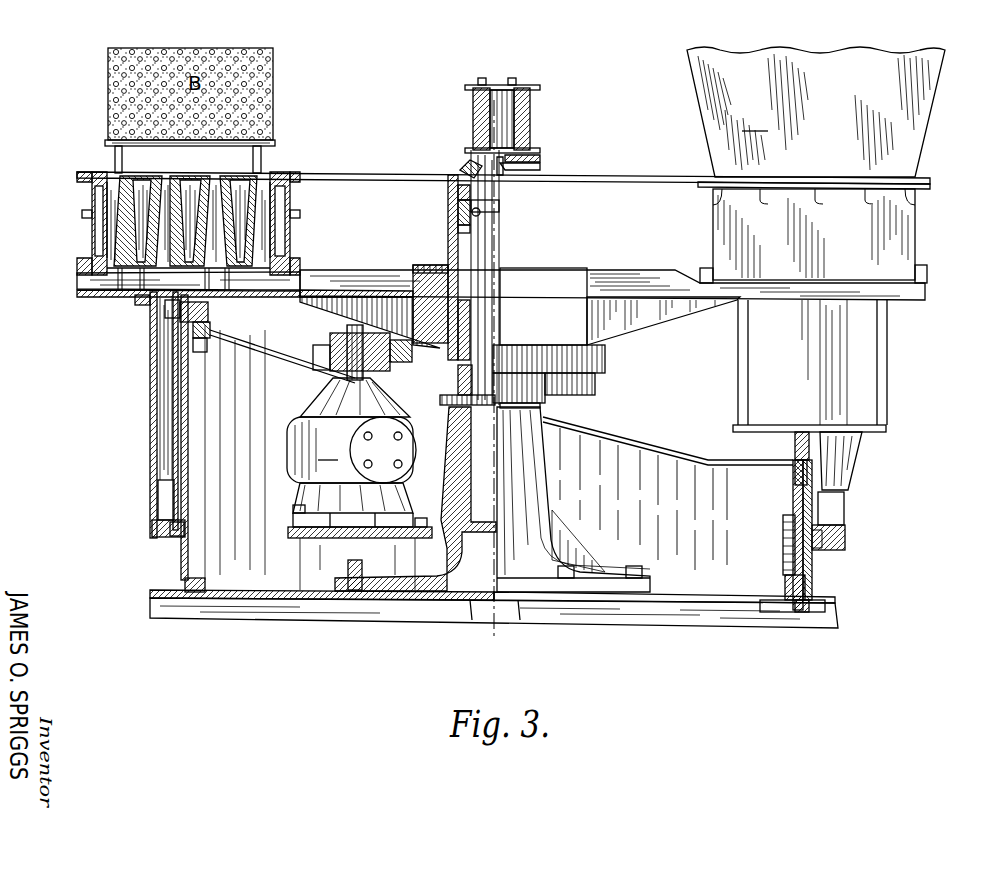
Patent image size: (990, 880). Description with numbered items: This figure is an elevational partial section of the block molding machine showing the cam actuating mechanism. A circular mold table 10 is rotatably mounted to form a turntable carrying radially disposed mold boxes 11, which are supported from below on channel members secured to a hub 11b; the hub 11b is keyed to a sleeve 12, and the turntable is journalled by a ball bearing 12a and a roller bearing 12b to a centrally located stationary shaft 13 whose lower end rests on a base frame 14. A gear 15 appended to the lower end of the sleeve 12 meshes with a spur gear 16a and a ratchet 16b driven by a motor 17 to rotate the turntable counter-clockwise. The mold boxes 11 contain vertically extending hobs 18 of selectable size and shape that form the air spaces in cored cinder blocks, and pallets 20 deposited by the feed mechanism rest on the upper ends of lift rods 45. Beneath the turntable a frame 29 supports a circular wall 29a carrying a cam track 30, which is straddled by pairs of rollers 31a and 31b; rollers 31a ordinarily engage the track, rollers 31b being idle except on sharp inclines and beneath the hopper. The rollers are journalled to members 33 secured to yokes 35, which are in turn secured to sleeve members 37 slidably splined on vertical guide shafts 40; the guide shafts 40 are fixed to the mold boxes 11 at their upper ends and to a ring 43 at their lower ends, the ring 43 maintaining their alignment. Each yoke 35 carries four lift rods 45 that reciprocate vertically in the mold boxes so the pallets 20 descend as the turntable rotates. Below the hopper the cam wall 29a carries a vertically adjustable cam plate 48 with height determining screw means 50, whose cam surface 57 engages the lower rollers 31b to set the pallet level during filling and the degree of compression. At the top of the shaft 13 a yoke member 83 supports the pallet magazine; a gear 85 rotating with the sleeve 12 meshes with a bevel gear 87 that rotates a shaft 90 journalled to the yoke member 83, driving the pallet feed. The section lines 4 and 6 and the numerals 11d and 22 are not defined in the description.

The section line 4- 4 is at (815, 590).
The section line 6- 6 is at (168, 275).
The mold table 10 is at (325, 174).
The mold boxes 11 is at (92, 232).
The hub 11b is at (440, 265).
The casing flange 11d is at (77, 285).
The sleeve 12 is at (448, 198).
The ball bearing 12a is at (448, 218).
The roller bearing 12b is at (460, 396).
The stationary shaft 13 is at (492, 255).
The base frame 14 is at (430, 568).
The gear 15 is at (608, 362).
The spur gear 16a is at (330, 365).
The ratchet 16b is at (342, 340).
The motor 17 is at (359, 484).
The hobs 18 is at (204, 178).
The pallets 20 is at (277, 146).
The hopper 22 is at (816, 112).
The frame 29 is at (255, 570).
The circular wall 29a is at (252, 448).
The cam track 30 is at (245, 352).
The rollers 31a is at (210, 328).
The rollers 31b is at (200, 370).
The members 33 is at (210, 312).
The yokes 35 is at (158, 300).
The sleeve members 37 is at (158, 332).
The vertical guide shafts 40 is at (158, 452).
The ring 43 is at (152, 532).
The lift rods 45 is at (115, 161).
The cam plate 48 is at (797, 515).
The screw means 50 is at (785, 572).
The cam surface 57 is at (795, 495).
The yoke member 83 is at (530, 118).
The gear 85 is at (466, 162).
The bevel gear 87 is at (540, 160).
The shaft 90 is at (503, 172).